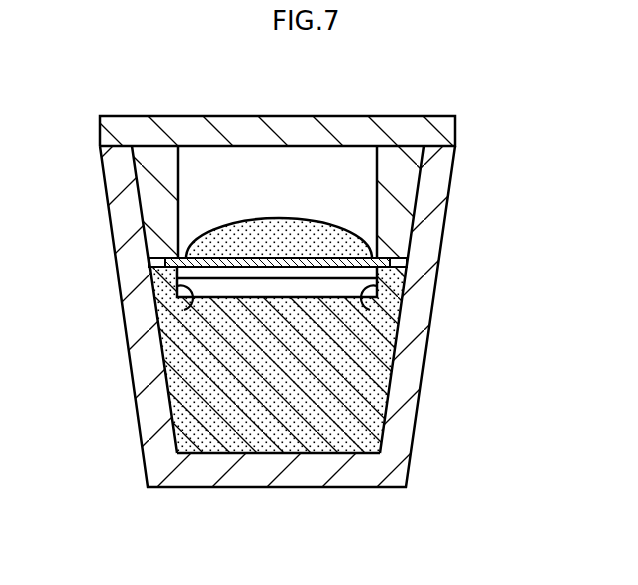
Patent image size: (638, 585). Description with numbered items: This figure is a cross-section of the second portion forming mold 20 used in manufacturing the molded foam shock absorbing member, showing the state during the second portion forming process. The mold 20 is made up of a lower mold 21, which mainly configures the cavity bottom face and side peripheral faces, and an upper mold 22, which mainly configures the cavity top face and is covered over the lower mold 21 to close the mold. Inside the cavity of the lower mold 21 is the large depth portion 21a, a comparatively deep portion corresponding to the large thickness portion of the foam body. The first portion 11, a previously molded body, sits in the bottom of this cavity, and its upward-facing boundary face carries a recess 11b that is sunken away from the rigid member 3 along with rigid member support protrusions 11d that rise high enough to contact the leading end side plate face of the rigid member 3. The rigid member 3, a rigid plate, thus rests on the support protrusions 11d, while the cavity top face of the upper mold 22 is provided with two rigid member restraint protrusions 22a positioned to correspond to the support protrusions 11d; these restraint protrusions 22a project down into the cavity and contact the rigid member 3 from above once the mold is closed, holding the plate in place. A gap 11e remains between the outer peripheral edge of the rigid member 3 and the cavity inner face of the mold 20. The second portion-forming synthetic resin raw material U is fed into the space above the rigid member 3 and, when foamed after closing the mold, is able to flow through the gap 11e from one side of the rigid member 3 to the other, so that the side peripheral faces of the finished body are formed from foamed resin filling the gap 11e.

The second portion forming mold 20 is at (300, 303).
The lower mold 21 is at (241, 344).
The large depth portion 21a is at (380, 431).
The upper mold 22 is at (312, 160).
The rigid member restraint protrusions 22a is at (178, 170).
The second portion-forming synthetic resin raw material U is at (285, 222).
The rigid member 3 is at (393, 262).
The first portion 11 is at (274, 360).
The recess 11b is at (272, 285).
The rigid member support protrusions 11d is at (191, 300).
The gap 11e is at (374, 321).